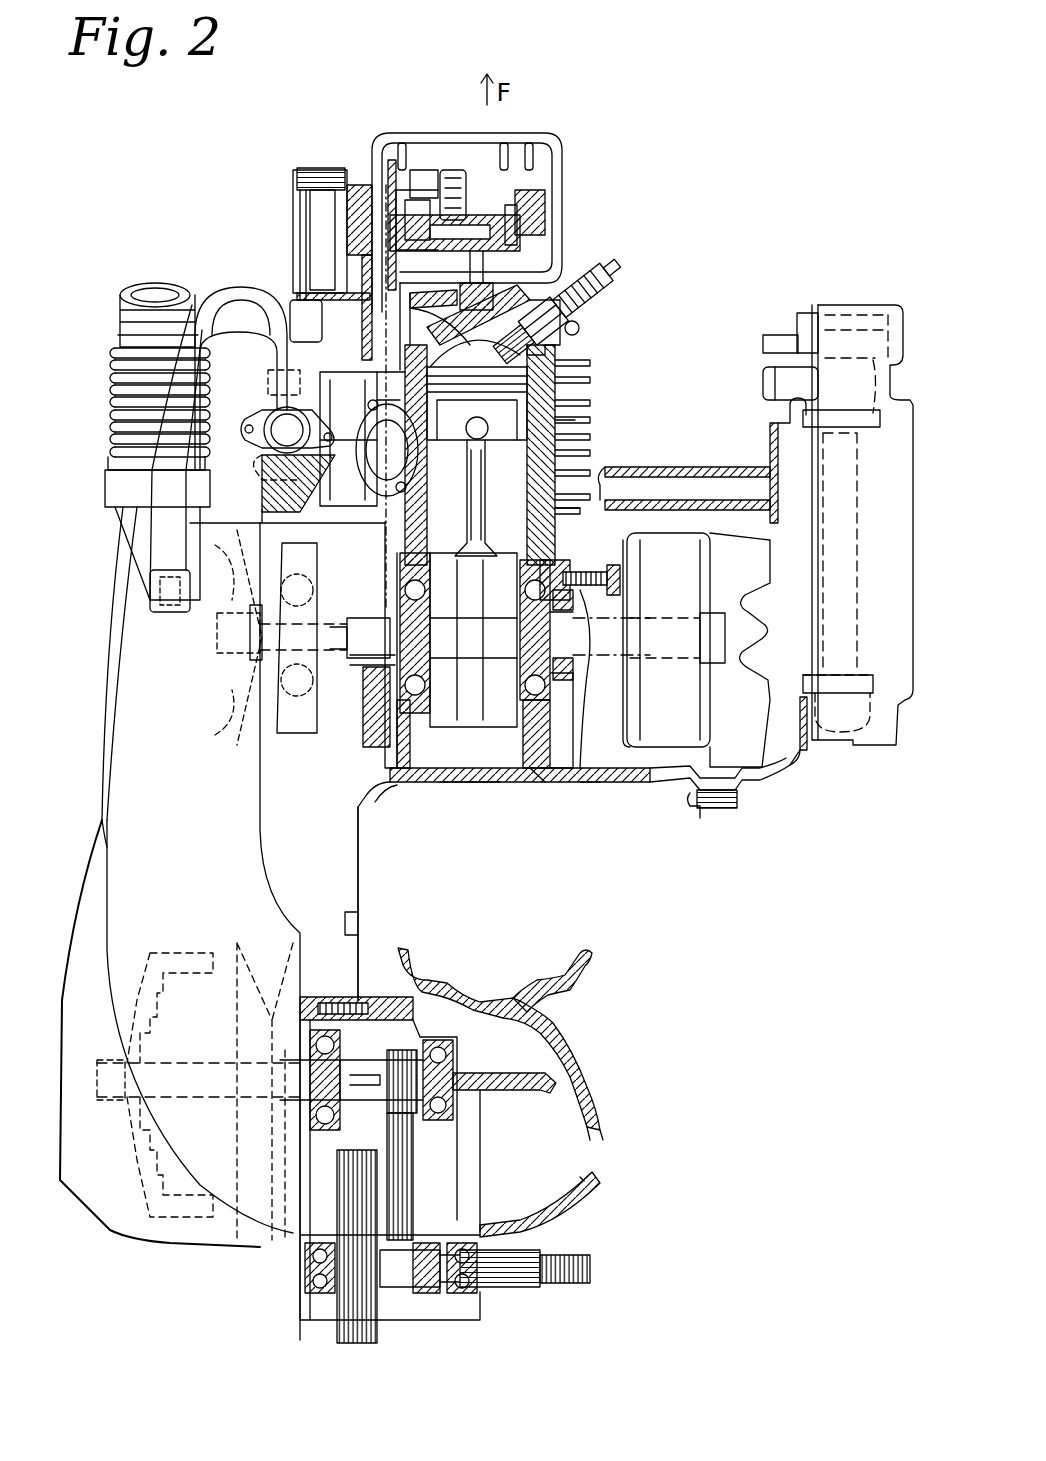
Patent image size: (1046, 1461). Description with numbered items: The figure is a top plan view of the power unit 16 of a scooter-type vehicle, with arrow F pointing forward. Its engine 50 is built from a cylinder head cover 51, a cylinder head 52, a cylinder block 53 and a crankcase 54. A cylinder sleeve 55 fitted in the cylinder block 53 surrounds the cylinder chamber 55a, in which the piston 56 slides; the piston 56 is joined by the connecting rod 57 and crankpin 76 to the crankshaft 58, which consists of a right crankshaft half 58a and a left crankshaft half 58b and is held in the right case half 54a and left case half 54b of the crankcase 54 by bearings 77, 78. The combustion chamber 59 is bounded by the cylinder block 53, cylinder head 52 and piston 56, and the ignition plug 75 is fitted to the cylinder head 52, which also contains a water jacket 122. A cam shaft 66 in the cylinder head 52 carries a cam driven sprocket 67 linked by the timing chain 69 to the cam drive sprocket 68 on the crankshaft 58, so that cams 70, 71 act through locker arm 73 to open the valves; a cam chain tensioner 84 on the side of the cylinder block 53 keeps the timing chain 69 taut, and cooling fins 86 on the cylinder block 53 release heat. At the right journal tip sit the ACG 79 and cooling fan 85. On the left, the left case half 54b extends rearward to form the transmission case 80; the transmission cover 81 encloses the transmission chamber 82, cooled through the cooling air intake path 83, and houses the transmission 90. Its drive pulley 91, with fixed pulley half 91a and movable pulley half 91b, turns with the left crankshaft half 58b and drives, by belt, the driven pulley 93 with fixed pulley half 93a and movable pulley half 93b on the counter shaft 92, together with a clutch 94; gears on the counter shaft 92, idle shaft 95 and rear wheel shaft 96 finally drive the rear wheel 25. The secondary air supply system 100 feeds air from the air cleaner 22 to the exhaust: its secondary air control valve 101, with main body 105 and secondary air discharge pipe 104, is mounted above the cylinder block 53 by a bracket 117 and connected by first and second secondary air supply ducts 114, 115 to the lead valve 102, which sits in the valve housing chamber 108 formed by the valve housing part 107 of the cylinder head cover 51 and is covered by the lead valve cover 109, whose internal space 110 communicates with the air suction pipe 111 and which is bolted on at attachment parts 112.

The power unit 16 is at (712, 175).
The air cleaner 22 is at (105, 847).
The rear wheel 25 is at (540, 965).
The engine 50 is at (644, 272).
The cylinder head cover 51 is at (505, 135).
The cylinder head 52 is at (560, 262).
The cylinder block 53 is at (600, 370).
The crankcase 54 is at (400, 826).
The right case half 54a is at (478, 784).
The left case half 54b is at (420, 784).
The cylinder sleeve 55 is at (580, 404).
The cylinder chamber 55a is at (574, 512).
The piston 56 is at (575, 434).
The connecting rod 57 is at (475, 504).
The crankshaft 58 is at (508, 812).
The right crankshaft half 58a is at (592, 783).
The left crankshaft half 58b is at (525, 783).
The combustion chamber 59 is at (522, 418).
The cam shaft 66 is at (440, 195).
The cam driven sprocket 67 is at (368, 302).
The cam drive sprocket 68 is at (365, 677).
The timing chain 69 is at (400, 170).
The cam 70 is at (485, 215).
The cam 71 is at (613, 278).
The locker arm 73 is at (478, 215).
The ignition plug 75 is at (602, 290).
The crankpin 76 is at (557, 572).
The bearing 77 is at (566, 655).
The bearing 78 is at (440, 680).
The ACG 79 is at (690, 793).
The transmission case 80 is at (70, 913).
The transmission cover 81 is at (60, 983).
The transmission chamber 82 is at (298, 866).
The cooling air intake path 83 is at (125, 318).
The cam chain tensioner 84 is at (412, 480).
The cooling fan 85 is at (795, 765).
The cooling fins 86 is at (622, 466).
The transmission 90 is at (204, 710).
The drive pulley 91 is at (265, 800).
The fixed pulley half 91a is at (270, 755).
The movable pulley half 91b is at (308, 735).
The counter shaft 92 is at (380, 1050).
The driven pulley 93 is at (180, 1292).
The fixed pulley half 93a is at (280, 1247).
The movable pulley half 93b is at (233, 1242).
The clutch 94 is at (133, 1212).
The idle shaft 95 is at (425, 1172).
The rear wheel shaft 96 is at (390, 1275).
The secondary air supply system 100 is at (238, 228).
The secondary air control valve 101 is at (275, 460).
The lead valve 102 is at (300, 252).
The secondary air discharge pipe 104 is at (268, 382).
The main body 105 is at (275, 490).
The valve housing part 107 is at (378, 160).
The valve housing chamber 108 is at (357, 185).
The lead valve cover 109 is at (298, 205).
The internal space 110 is at (308, 226).
The air suction pipe 111 is at (293, 292).
The attachment parts 112 is at (300, 172).
The first secondary air supply duct 114 is at (232, 300).
The second secondary air supply duct 115 is at (275, 352).
The bracket 117 is at (326, 480).
The water jacket 122 is at (579, 330).